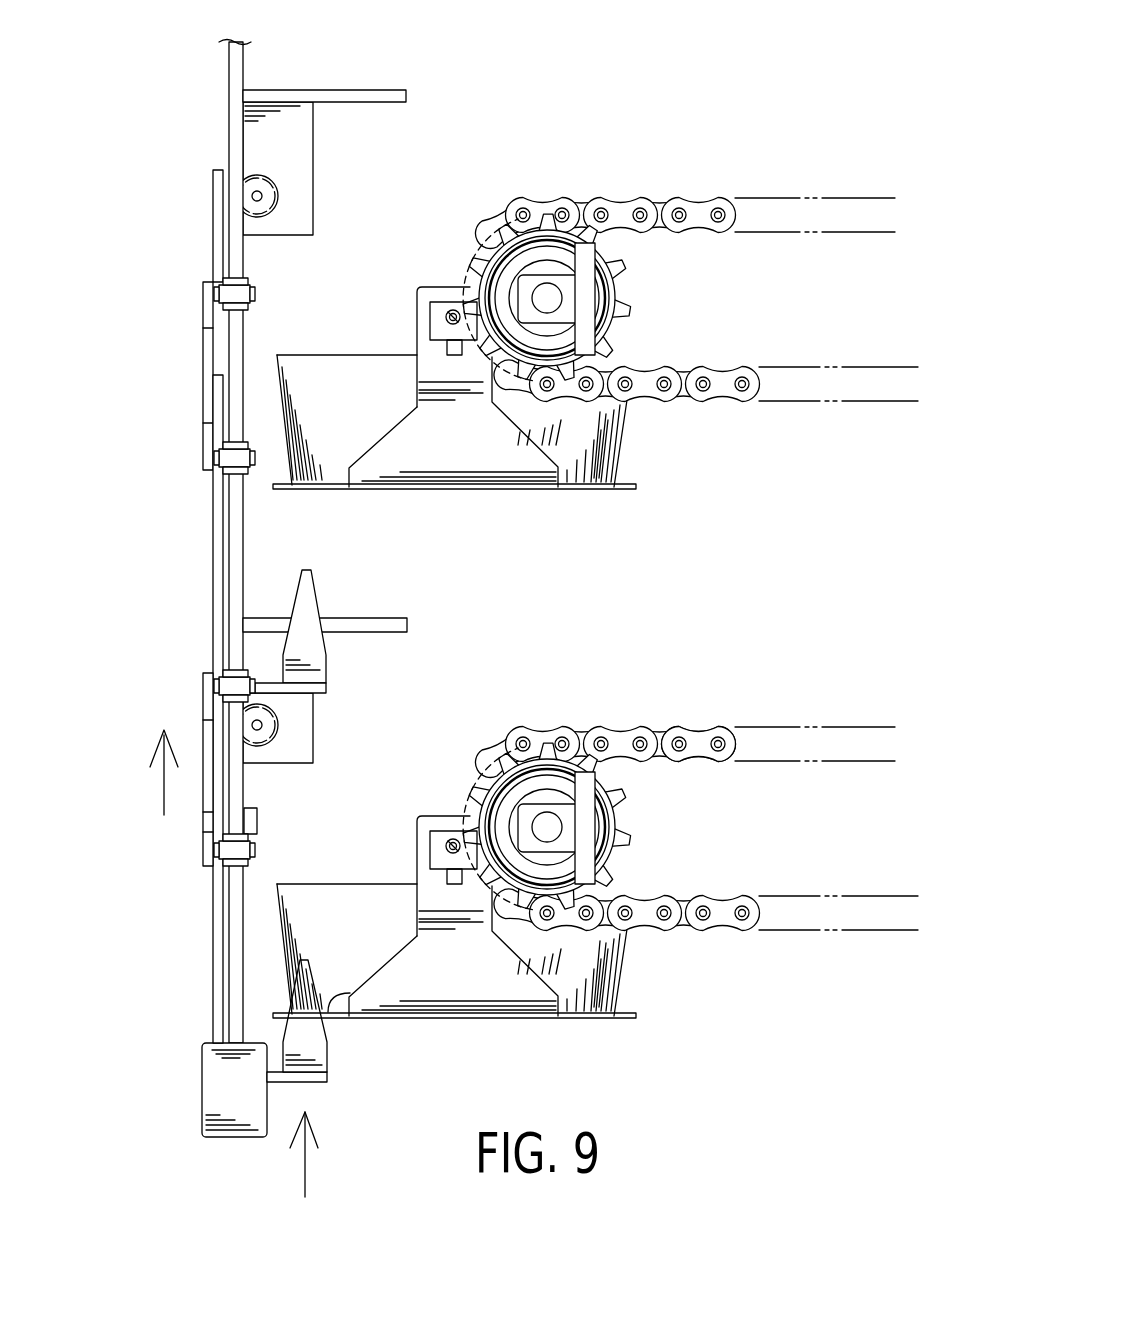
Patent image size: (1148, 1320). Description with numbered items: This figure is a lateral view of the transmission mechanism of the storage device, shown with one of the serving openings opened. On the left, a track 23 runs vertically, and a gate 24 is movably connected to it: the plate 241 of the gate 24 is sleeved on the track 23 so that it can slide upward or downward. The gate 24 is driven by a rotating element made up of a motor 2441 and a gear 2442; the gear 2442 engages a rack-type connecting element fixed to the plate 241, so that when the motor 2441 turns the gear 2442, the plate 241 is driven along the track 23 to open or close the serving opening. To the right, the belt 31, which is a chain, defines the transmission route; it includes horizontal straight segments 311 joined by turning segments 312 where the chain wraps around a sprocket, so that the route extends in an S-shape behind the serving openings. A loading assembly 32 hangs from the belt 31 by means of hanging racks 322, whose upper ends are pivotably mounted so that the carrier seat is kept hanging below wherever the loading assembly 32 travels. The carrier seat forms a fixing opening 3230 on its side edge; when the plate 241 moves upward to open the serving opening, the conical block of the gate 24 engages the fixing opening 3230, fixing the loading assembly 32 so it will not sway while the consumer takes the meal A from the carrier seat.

The track 23 is at (233, 948).
The gate 24 is at (192, 313).
The plate 241 is at (208, 792).
The motor 2441 is at (303, 717).
The gear 2442 is at (268, 733).
The belt 31 is at (778, 180).
The straight segment 311 is at (720, 735).
The turning segment 312 is at (478, 775).
The loading assembly 32 is at (590, 502).
The hanging rack 322 is at (515, 980).
The fixing opening 3230 is at (350, 993).
The meal A is at (607, 430).